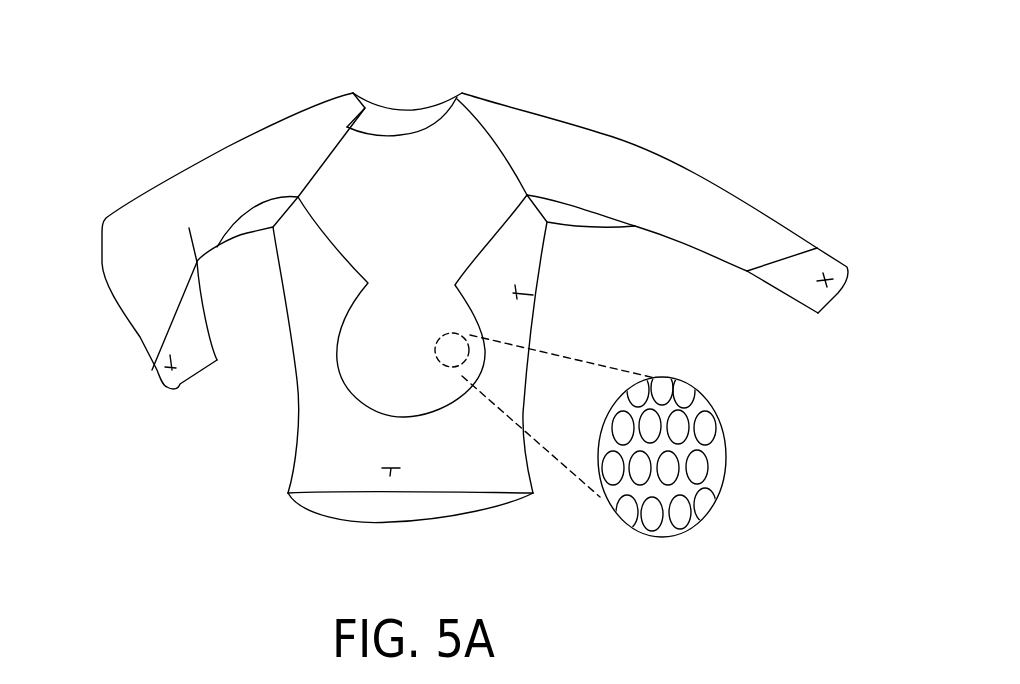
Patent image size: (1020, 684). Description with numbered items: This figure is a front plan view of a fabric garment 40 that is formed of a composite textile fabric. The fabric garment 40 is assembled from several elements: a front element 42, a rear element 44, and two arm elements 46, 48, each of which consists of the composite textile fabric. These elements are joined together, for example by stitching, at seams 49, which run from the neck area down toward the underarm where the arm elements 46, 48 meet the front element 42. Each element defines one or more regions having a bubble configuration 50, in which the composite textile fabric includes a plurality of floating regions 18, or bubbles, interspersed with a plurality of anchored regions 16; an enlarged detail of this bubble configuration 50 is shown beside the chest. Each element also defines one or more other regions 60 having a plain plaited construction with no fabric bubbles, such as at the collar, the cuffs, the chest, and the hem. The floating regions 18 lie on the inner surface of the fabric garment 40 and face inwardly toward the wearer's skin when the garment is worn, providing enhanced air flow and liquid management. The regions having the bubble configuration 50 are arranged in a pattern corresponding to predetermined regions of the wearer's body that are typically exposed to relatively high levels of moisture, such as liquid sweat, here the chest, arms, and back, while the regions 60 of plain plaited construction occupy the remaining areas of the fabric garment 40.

The fabric garment 40 is at (201, 64).
The front element 42 is at (318, 463).
The rear element 44 is at (413, 507).
The arm element 46 is at (181, 190).
The arm element 48 is at (715, 200).
The seams 49 is at (322, 102).
The region having a bubble configuration 50 is at (457, 143).
The region having plain plaited construction 60 is at (832, 297).
The floating regions 18 is at (697, 380).
The anchored regions 16 is at (724, 442).